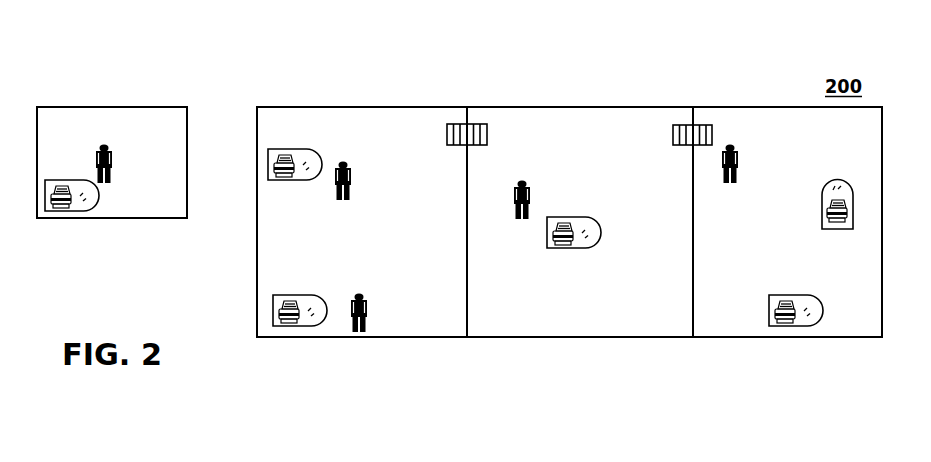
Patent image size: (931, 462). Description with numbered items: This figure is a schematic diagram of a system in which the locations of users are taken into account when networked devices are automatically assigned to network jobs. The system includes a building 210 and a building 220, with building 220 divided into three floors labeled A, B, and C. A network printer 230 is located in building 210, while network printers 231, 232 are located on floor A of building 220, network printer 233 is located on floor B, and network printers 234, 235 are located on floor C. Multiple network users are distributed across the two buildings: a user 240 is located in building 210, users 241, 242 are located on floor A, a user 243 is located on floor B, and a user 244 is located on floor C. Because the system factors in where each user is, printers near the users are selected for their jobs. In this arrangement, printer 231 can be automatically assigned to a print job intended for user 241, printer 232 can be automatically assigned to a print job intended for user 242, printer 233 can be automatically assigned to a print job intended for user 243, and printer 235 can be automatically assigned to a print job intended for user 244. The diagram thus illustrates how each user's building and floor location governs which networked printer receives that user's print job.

The building 210 is at (112, 90).
The building 220 is at (339, 105).
The network printer 230 is at (63, 212).
The network printer 231 is at (277, 180).
The network printer 232 is at (293, 327).
The network printer 233 is at (567, 248).
The network printer 234 is at (769, 322).
The network printer 235 is at (842, 229).
The user 240 is at (115, 162).
The user 241 is at (352, 181).
The user 242 is at (371, 308).
The user 243 is at (532, 197).
The user 244 is at (741, 161).